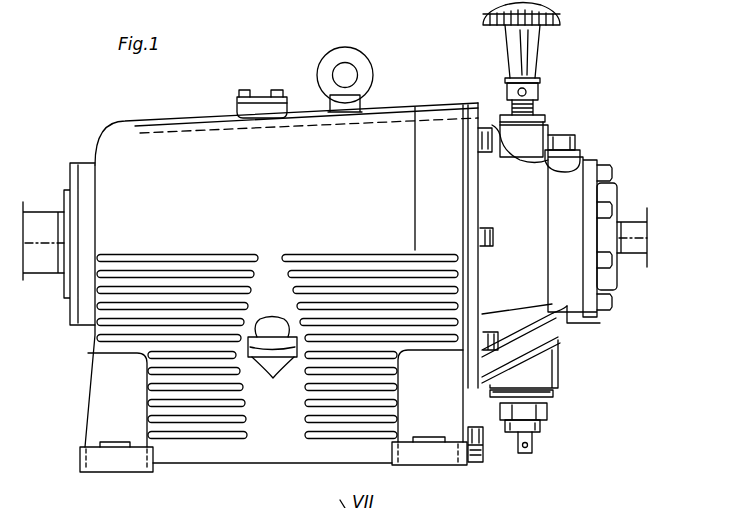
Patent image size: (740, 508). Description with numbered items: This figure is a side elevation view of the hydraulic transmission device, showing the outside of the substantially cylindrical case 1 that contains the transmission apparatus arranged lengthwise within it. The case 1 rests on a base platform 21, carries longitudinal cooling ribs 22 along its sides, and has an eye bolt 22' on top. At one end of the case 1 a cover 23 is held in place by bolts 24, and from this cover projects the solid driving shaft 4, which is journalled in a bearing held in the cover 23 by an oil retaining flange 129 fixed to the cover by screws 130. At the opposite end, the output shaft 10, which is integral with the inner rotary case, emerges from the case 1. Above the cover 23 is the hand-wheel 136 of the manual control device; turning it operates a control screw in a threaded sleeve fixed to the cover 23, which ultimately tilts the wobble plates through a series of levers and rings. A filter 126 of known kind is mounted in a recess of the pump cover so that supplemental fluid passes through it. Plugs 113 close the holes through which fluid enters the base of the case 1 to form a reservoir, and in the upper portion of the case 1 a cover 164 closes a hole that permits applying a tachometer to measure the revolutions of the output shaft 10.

The case 1 is at (108, 130).
The output shaft 10 is at (40, 222).
The cover 164 is at (237, 103).
The eye bolt 22' is at (367, 79).
The bolts 24 is at (483, 127).
The hand-wheel 136 is at (560, 15).
The oil retaining flange 129 is at (590, 155).
The driving shaft 4 is at (638, 230).
The screws 130 is at (605, 313).
The cover 23 is at (566, 350).
The filter 126 is at (548, 412).
The cooling ribs 22 is at (249, 347).
The base platform 21 is at (100, 463).
The plugs 113 is at (273, 363).